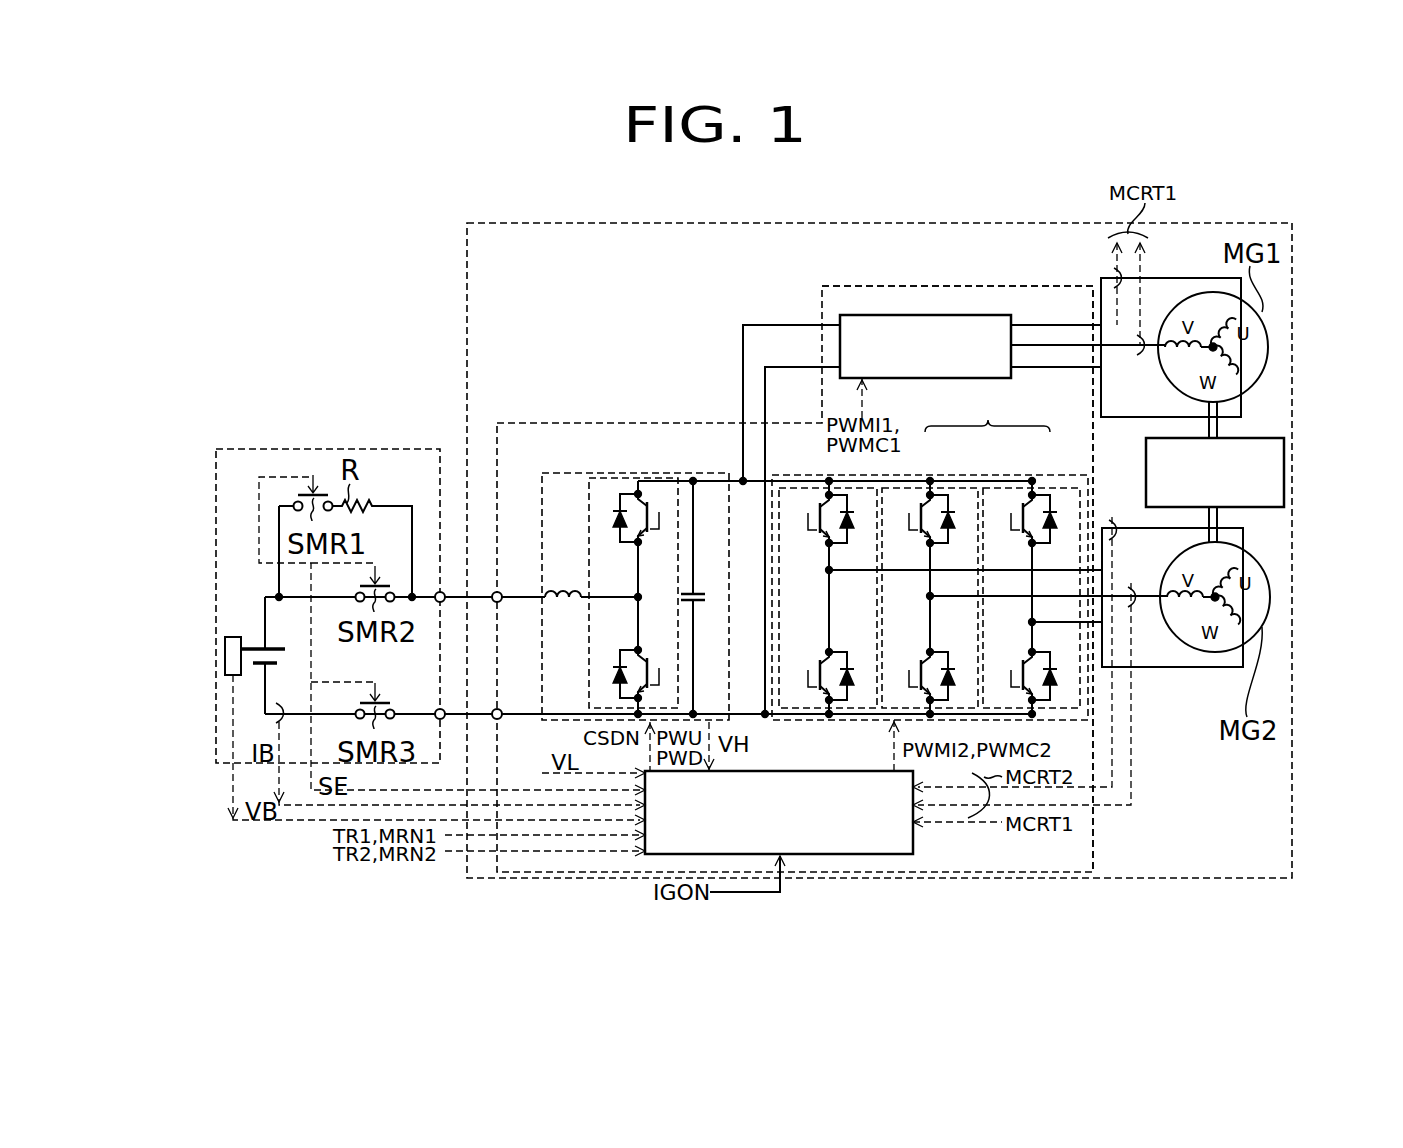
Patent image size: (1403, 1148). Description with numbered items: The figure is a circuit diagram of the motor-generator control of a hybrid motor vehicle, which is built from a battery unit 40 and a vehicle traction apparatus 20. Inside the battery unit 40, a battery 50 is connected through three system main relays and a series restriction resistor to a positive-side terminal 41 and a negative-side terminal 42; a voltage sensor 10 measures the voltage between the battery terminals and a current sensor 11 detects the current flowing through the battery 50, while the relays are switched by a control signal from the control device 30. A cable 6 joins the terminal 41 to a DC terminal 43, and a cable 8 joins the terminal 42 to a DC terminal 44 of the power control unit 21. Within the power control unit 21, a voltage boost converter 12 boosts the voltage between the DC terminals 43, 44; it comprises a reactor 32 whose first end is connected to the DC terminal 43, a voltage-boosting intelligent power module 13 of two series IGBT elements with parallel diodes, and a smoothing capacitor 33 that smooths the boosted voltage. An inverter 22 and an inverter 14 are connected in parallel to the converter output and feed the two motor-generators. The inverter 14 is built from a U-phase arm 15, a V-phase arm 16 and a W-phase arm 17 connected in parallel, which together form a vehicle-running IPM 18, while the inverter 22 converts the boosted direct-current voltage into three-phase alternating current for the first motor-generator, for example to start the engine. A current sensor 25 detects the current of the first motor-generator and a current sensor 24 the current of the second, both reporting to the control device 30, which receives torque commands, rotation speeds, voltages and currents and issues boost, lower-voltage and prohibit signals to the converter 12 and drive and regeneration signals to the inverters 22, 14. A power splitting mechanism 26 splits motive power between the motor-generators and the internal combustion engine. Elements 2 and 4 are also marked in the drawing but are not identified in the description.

The motor drive device 2 is at (1097, 297).
The power cable 4 is at (1104, 648).
The cable 6 is at (447, 602).
The cable 8 is at (447, 719).
The voltage sensor 10 is at (230, 636).
The current sensor 11 is at (280, 711).
The voltage boost converter 12 is at (542, 476).
The voltage-boosting intelligent power module 13 is at (588, 520).
The inverter 14 is at (794, 475).
The U-phase arm 15 is at (872, 482).
The V-phase arm 16 is at (952, 482).
The W-phase arm 17 is at (1012, 482).
The vehicle-running IPM 18 is at (987, 410).
The vehicle traction apparatus 20 is at (467, 223).
The power control unit 21 is at (821, 297).
The inverter 22 is at (998, 315).
The current sensor 24 is at (1116, 520).
The current sensor 25 is at (1117, 286).
The power splitting mechanism 26 is at (1146, 452).
The control device 30 is at (918, 840).
The reactor 32 is at (560, 592).
The smoothing capacitor 33 is at (697, 602).
The battery unit 40 is at (345, 449).
The terminal 41 is at (428, 592).
The terminal 42 is at (428, 710).
The DC terminal 43 is at (500, 595).
The DC terminal 44 is at (500, 712).
The battery 50 is at (258, 646).